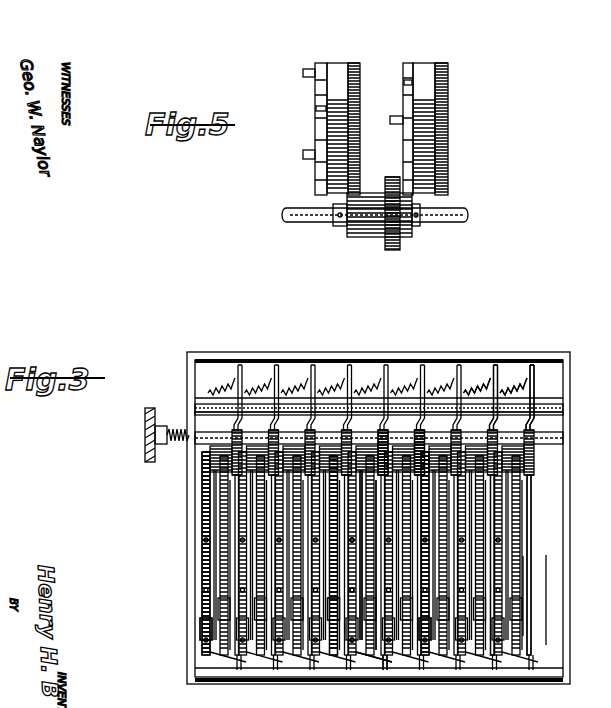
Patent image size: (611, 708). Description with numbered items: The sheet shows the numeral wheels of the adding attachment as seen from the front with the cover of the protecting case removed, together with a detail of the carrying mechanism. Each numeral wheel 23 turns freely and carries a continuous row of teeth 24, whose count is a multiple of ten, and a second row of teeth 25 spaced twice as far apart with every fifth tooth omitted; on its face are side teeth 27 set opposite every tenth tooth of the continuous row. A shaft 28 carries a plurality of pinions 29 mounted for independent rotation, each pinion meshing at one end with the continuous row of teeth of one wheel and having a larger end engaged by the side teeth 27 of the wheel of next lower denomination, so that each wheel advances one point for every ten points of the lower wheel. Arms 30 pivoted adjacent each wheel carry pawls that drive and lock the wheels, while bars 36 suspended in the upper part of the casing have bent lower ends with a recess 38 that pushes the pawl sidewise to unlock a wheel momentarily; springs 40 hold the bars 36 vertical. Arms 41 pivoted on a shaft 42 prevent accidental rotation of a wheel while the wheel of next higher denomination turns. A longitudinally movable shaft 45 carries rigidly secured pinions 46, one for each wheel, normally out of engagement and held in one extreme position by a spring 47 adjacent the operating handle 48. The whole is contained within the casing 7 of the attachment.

In FIG. 3, the frame 7 is at (563, 530).
In FIG. 5, the numeral wheel 23 is at (341, 64).
In FIG. 3, the numeral wheel 23 is at (423, 690).
In FIG. 5, the continuous row of teeth 24 is at (360, 74).
In FIG. 5, the second row of teeth 25 is at (316, 108).
In FIG. 5, the side teeth 27 is at (303, 73).
In FIG. 5, the shaft 28 is at (465, 213).
In FIG. 3, the shaft 28 is at (545, 440).
In FIG. 5, the pinion 29 is at (390, 250).
In FIG. 3, the pinion 29 is at (412, 444).
In FIG. 3, the arm 30 is at (530, 590).
In FIG. 3, the bar 36 is at (580, 500).
In FIG. 3, the recess 38 is at (546, 617).
In FIG. 3, the spring 40 is at (496, 382).
In FIG. 3, the arm 41 is at (340, 655).
In FIG. 3, the shaft 42 is at (392, 660).
In FIG. 3, the shaft 45 is at (545, 410).
In FIG. 3, the pinion 46 is at (530, 412).
In FIG. 3, the spring 47 is at (178, 445).
In FIG. 3, the operating handle 48 is at (145, 435).